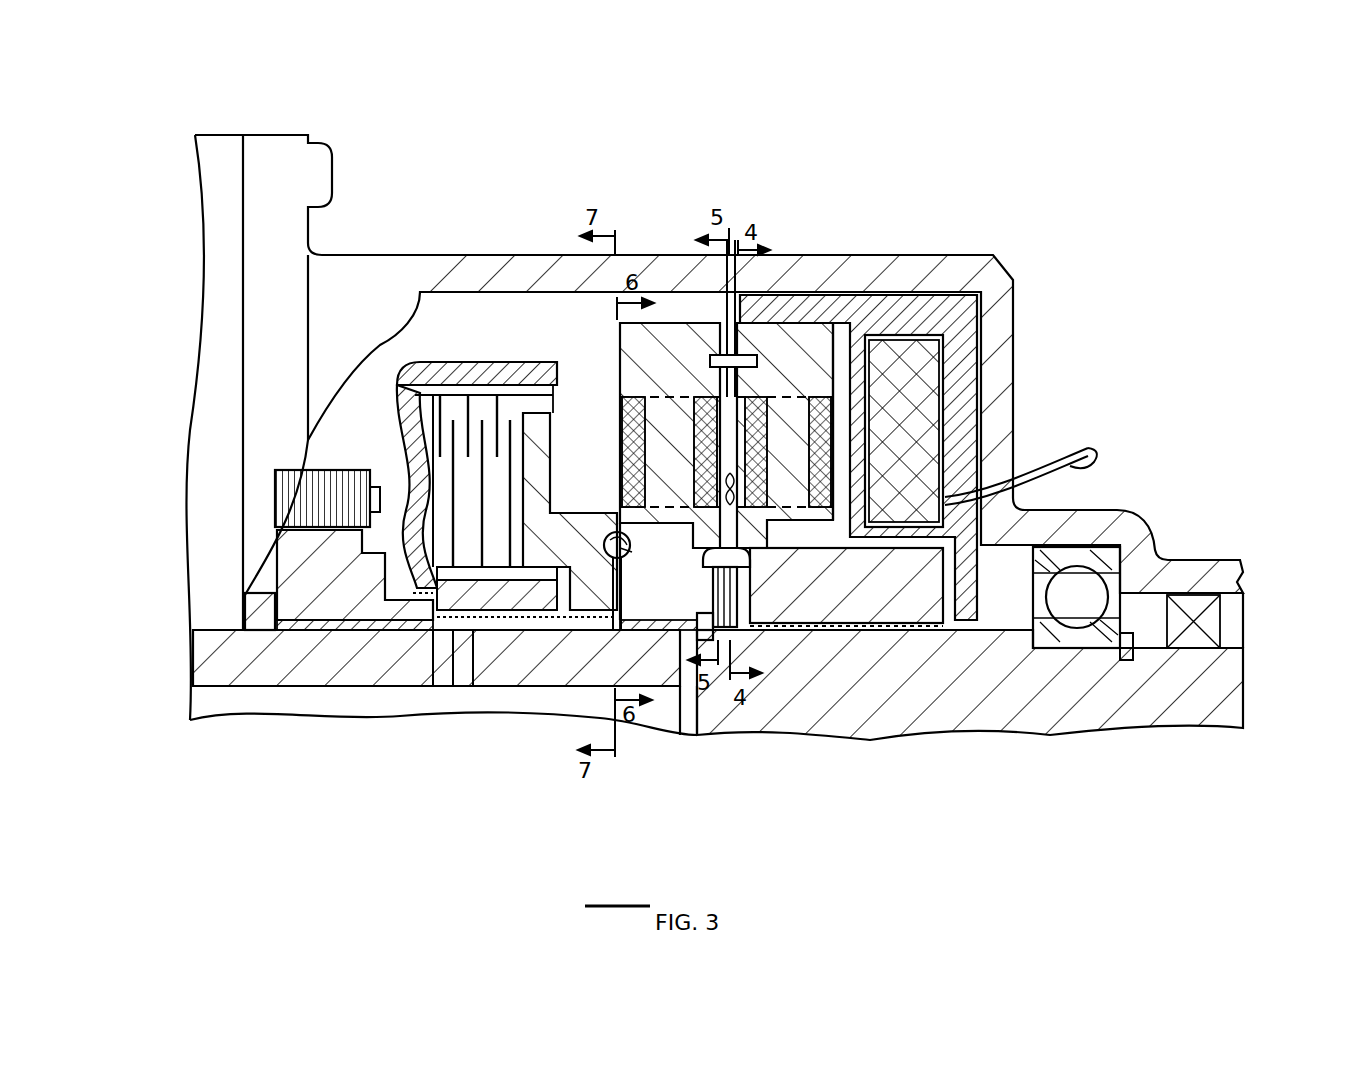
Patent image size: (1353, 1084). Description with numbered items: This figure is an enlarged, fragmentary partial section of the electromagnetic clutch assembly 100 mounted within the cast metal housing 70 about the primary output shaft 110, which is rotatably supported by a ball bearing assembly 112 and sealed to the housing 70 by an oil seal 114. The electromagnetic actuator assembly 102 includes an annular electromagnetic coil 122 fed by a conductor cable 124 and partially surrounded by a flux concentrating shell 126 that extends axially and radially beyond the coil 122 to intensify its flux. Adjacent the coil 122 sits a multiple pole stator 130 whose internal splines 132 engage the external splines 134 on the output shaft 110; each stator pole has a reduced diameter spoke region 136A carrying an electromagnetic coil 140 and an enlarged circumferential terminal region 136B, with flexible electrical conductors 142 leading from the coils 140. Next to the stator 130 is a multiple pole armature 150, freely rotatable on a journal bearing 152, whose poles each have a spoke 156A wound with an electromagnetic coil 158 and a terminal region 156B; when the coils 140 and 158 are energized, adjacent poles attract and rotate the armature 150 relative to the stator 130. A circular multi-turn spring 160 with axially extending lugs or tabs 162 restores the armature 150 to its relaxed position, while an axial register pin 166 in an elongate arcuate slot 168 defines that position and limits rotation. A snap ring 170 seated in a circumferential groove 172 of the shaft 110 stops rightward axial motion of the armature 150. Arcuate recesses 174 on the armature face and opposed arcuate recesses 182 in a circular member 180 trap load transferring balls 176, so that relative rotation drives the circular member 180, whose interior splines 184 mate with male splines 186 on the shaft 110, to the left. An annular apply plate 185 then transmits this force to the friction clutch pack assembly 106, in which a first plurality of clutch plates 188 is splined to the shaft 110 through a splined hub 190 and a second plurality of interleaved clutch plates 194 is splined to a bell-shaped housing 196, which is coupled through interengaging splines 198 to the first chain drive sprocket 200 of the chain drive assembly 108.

The housing 70 is at (376, 275).
The electromagnetic clutch assembly 100 is at (910, 124).
The electromagnetic actuator assembly 102 is at (953, 218).
The friction clutch pack assembly 106 is at (441, 160).
The chain drive assembly 108 is at (345, 106).
The primary output shaft 110 is at (1203, 692).
The ball bearing assembly 112 is at (1087, 583).
The oil seal 114 is at (1207, 613).
The electromagnetic coil 122 is at (920, 372).
The conductor cable 124 is at (1064, 466).
The flux concentrating shell 126 is at (968, 423).
The multiple pole stator 130 is at (897, 590).
The internal splines 132 is at (905, 630).
The external splines 134 is at (953, 632).
The spoke region 136A is at (806, 460).
The circumferential terminal region 136B is at (770, 430).
The electromagnetic coil 140 is at (752, 432).
The flexible electrical conductors 142 is at (747, 540).
The multiple pole armature 150 is at (656, 310).
The journal bearing 152 is at (700, 641).
The spoke 156A is at (677, 442).
The circumferential terminal region 156B is at (667, 340).
The electromagnetic coil 158 is at (634, 478).
The circular multi-turn spring 160 is at (748, 552).
The lugs or tabs 162 is at (777, 557).
The axial register pin 166 is at (722, 350).
The elongate arcuate slot 168 is at (708, 362).
The snap ring 170 is at (717, 642).
The circumferential groove 172 is at (738, 628).
The arcuate recesses 174 is at (623, 565).
The load transferring ball 176 is at (633, 545).
The circular member 180 is at (500, 620).
The arcuate recesses 182 is at (620, 530).
The interior splines 184 is at (578, 628).
The annular apply plate 185 is at (537, 435).
The male splines 186 is at (445, 632).
The first plurality of clutch plates 188 is at (443, 520).
The splined hub 190 is at (488, 605).
The second plurality of clutch plates 194 is at (472, 400).
The bell-shaped housing 196 is at (397, 390).
The interengaging splines 198 is at (303, 564).
The first chain drive sprocket 200 is at (303, 487).